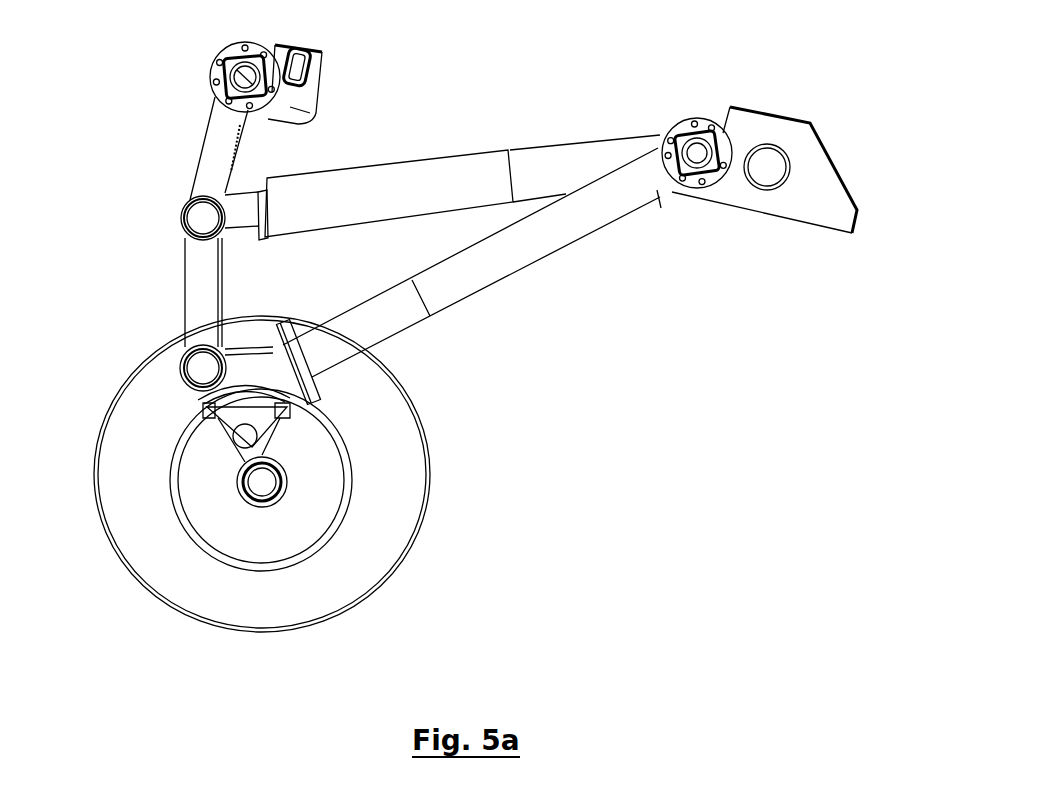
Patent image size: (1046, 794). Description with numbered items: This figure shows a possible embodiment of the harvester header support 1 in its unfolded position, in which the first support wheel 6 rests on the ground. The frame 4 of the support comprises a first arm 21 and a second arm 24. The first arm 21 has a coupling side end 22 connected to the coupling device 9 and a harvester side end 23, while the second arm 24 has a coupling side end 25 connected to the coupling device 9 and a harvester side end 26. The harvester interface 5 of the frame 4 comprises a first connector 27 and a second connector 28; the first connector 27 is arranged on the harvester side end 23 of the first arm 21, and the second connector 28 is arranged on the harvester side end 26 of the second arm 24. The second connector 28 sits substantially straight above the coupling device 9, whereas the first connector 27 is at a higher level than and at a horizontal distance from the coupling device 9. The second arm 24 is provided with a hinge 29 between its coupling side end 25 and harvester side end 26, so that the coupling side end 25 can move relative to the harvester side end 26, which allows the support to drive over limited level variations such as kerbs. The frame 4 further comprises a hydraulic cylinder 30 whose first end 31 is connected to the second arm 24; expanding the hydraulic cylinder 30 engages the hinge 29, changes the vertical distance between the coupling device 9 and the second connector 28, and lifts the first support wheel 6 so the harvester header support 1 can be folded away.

The harvester header support 1 is at (143, 272).
The frame 4 is at (387, 110).
The harvester interface 5 is at (855, 200).
The first support wheel 6 is at (328, 595).
The coupling device 9 is at (287, 433).
The first arm 21 is at (522, 287).
The coupling side end 22 is at (326, 350).
The harvester side end 23 is at (668, 237).
The second arm 24 is at (190, 173).
The coupling side end 25 is at (213, 338).
The harvester side end 26 is at (212, 118).
The first connector 27 is at (762, 164).
The second connector 28 is at (320, 48).
The hinge 29 is at (201, 218).
The hydraulic cylinder 30 is at (410, 203).
The first end 31 is at (237, 224).